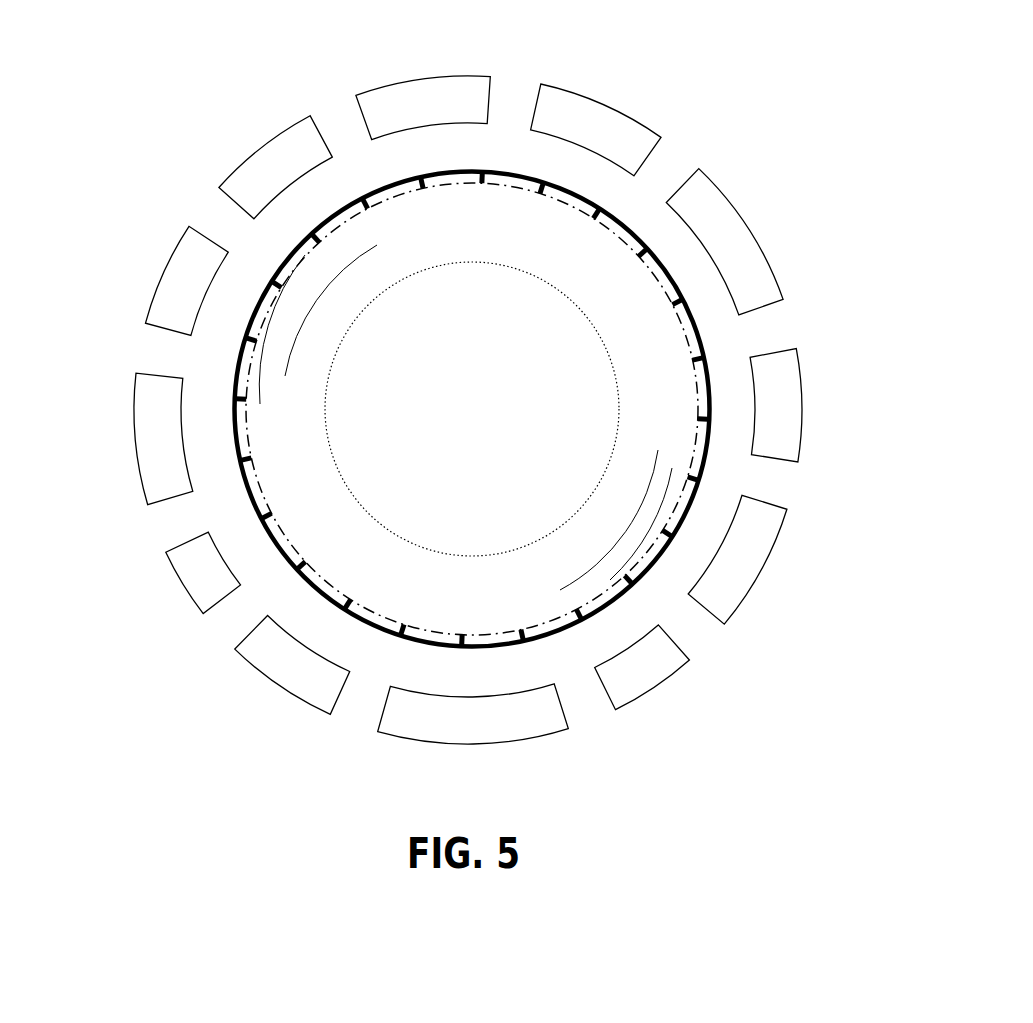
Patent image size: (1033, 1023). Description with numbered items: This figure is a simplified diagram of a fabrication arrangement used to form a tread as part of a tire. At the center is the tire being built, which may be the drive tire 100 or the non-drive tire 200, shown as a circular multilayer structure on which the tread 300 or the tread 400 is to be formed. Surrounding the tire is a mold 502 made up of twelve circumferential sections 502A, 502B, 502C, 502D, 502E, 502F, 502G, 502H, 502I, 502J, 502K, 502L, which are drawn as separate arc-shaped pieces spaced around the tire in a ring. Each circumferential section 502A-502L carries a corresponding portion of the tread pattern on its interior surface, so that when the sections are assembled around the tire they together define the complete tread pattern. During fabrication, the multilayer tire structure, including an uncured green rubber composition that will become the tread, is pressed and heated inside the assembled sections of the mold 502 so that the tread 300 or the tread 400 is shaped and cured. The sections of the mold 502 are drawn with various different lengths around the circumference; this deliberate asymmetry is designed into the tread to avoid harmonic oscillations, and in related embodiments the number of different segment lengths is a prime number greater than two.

The drive tire 100 is at (465, 417).
The non-drive tire 200 is at (505, 449).
The tread 300 is at (411, 358).
The tread 400 is at (262, 252).
The mold 502 is at (462, 413).
The circumferential section 502A is at (392, 84).
The circumferential section 502B is at (640, 120).
The circumferential section 502C is at (760, 248).
The circumferential section 502D is at (843, 420).
The circumferential section 502E is at (777, 542).
The circumferential section 502F is at (653, 695).
The circumferential section 502G is at (473, 743).
The circumferential section 502H is at (258, 672).
The circumferential section 502I is at (182, 585).
The circumferential section 502J is at (137, 473).
The circumferential section 502K is at (153, 292).
The circumferential section 502L is at (263, 142).